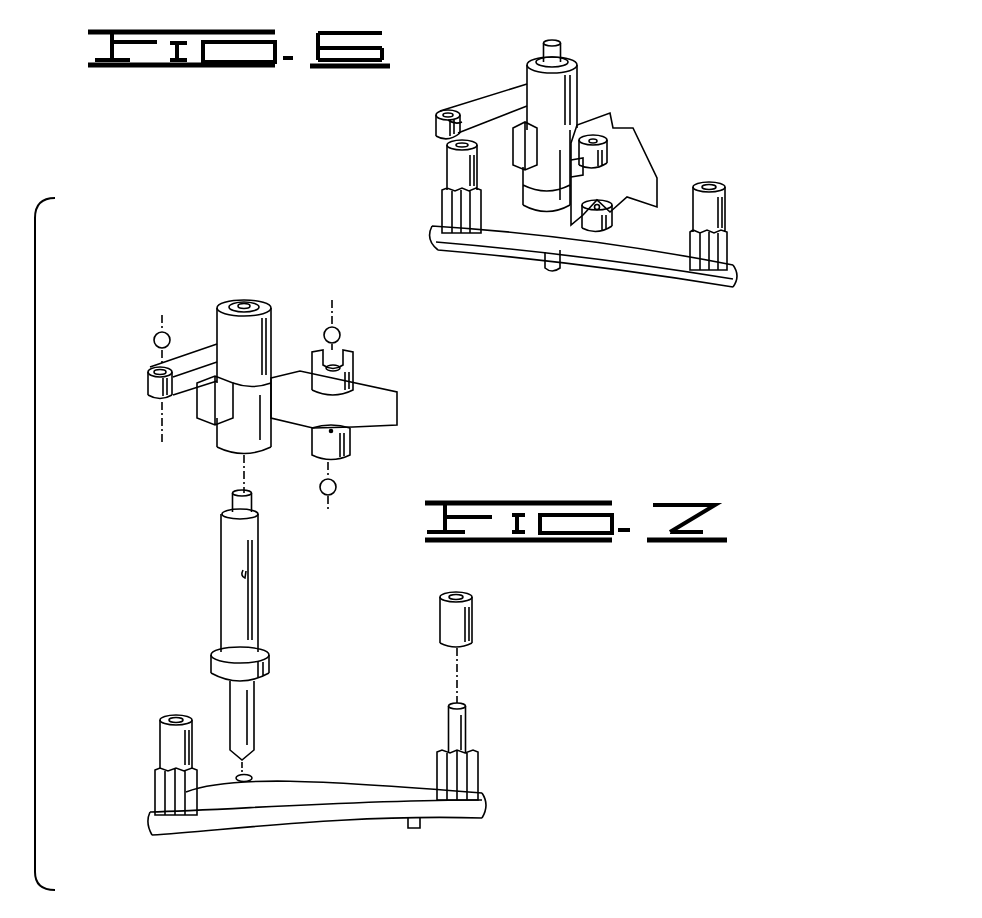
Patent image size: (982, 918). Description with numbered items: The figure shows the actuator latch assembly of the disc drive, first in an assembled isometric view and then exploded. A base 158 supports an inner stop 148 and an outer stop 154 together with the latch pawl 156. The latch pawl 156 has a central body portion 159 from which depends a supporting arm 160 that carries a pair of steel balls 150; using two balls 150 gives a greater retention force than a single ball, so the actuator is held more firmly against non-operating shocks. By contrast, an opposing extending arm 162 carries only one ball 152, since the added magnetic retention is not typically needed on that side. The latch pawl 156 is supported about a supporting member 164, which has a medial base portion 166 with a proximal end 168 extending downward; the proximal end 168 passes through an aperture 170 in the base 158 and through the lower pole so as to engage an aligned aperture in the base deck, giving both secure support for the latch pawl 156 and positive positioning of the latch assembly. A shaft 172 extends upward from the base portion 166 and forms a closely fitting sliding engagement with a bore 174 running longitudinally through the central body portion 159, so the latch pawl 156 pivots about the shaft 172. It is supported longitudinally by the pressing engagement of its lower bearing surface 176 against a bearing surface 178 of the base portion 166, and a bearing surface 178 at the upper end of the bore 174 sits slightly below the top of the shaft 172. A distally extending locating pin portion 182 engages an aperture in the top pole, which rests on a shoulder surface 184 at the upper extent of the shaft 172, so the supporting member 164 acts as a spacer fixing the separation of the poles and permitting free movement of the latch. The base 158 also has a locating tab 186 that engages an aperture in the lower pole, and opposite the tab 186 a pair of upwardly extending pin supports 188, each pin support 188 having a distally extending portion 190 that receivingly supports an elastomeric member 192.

In FIG. 6, the inner stop 148 is at (447, 174).
In FIG. 7, the inner stop 148 is at (159, 758).
In FIG. 6, the steel ball 150 is at (621, 209).
In FIG. 7, the steel ball 150 is at (341, 337).
In FIG. 6, the ball 152 is at (437, 113).
In FIG. 7, the ball 152 is at (154, 338).
In FIG. 6, the outer stop 154 is at (728, 207).
In FIG. 7, the outer stop 154 is at (526, 696).
In FIG. 6, the latch pawl 156 is at (557, 106).
In FIG. 7, the latch pawl 156 is at (198, 354).
In FIG. 6, the base 158 is at (463, 250).
In FIG. 7, the base 158 is at (326, 791).
In FIG. 6, the central body portion 159 is at (545, 97).
In FIG. 7, the central body portion 159 is at (252, 337).
In FIG. 6, the supporting arm 160 is at (636, 150).
In FIG. 6, the extending arm 162 is at (480, 100).
In FIG. 7, the extending arm 162 is at (183, 369).
In FIG. 7, the supporting member 164 is at (249, 610).
In FIG. 7, the medial base portion 166 is at (270, 665).
In FIG. 7, the proximal end 168 is at (256, 730).
In FIG. 7, the aperture 170 is at (252, 776).
In FIG. 7, the shaft 172 is at (249, 575).
In FIG. 7, the bore 174 is at (247, 304).
In FIG. 7, the lower bearing surface 176 is at (215, 432).
In FIG. 6, the bearing surface 178 is at (533, 55).
In FIG. 7, the bearing surface 178 is at (230, 305).
In FIG. 6, the locating pin portion 182 is at (557, 40).
In FIG. 7, the locating pin portion 182 is at (241, 492).
In FIG. 6, the shoulder surface 184 is at (568, 57).
In FIG. 7, the shoulder surface 184 is at (259, 515).
In FIG. 7, the locating tab 186 is at (419, 827).
In FIG. 7, the pin support 188 is at (338, 703).
In FIG. 7, the distally extending portion 190 is at (467, 730).
In FIG. 7, the elastomeric member 192 is at (338, 698).